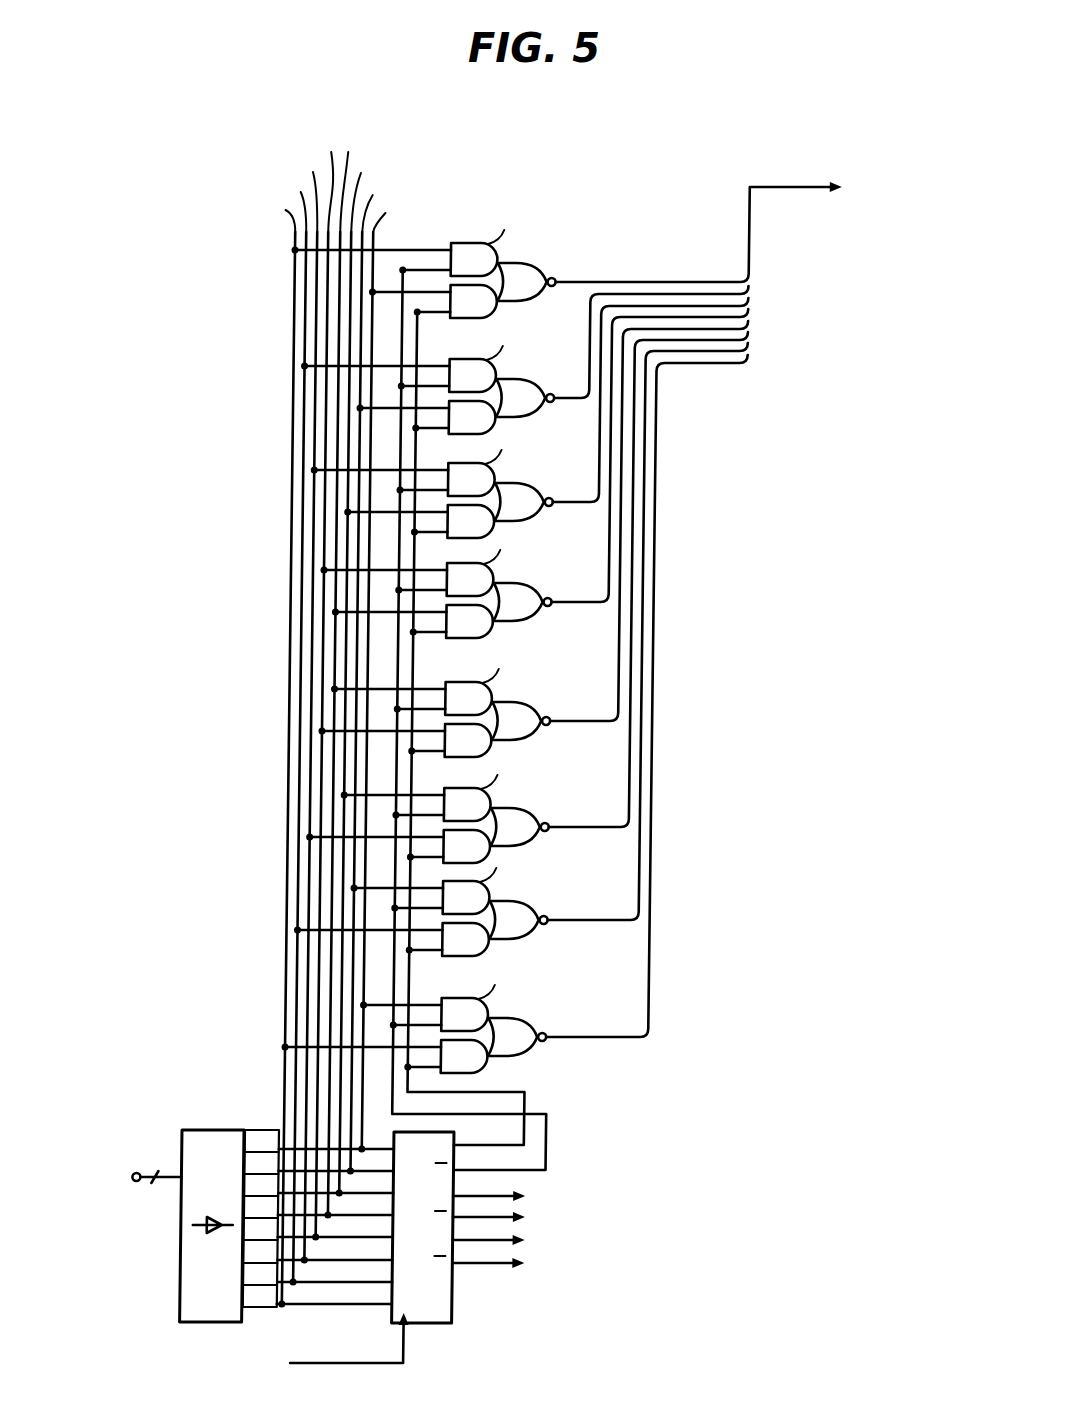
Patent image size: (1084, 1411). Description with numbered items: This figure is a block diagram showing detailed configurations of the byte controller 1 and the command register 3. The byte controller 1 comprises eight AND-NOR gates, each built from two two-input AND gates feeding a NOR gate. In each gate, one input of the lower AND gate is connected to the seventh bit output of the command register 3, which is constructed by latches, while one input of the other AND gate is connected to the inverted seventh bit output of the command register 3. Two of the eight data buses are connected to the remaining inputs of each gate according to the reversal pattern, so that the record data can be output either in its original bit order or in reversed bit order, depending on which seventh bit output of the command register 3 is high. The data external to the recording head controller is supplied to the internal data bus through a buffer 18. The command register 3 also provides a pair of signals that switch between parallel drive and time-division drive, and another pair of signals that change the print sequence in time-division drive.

The byte controller 1 is at (239, 617).
The command register 3 is at (466, 1290).
The buffer 18 is at (194, 1287).